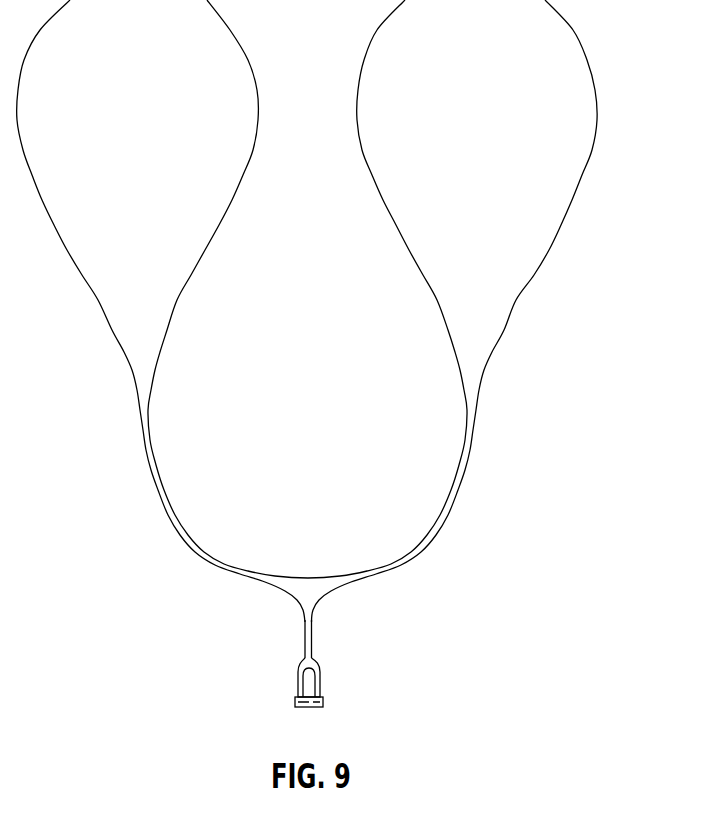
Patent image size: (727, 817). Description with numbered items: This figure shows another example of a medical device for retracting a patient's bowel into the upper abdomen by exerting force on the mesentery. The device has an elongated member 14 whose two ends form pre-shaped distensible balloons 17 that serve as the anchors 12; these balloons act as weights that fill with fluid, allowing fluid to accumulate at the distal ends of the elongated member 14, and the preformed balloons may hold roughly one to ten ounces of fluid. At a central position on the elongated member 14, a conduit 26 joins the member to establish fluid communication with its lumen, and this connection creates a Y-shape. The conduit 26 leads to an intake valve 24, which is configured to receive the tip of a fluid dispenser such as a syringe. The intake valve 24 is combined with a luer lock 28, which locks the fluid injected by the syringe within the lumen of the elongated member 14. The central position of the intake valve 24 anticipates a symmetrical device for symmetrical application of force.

The anchor 12 is at (535, 112).
The distensible balloon 17 is at (485, 242).
The elongated member 14 is at (458, 467).
The conduit 26 is at (308, 623).
The intake valve 24 is at (307, 683).
The luer lock 28 is at (297, 708).